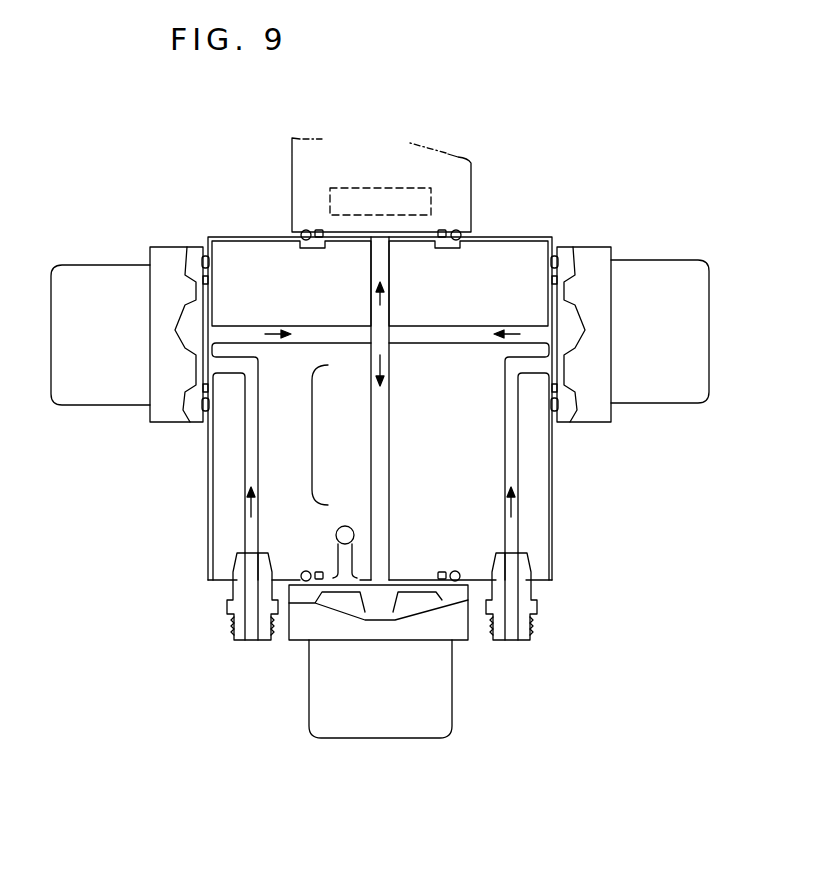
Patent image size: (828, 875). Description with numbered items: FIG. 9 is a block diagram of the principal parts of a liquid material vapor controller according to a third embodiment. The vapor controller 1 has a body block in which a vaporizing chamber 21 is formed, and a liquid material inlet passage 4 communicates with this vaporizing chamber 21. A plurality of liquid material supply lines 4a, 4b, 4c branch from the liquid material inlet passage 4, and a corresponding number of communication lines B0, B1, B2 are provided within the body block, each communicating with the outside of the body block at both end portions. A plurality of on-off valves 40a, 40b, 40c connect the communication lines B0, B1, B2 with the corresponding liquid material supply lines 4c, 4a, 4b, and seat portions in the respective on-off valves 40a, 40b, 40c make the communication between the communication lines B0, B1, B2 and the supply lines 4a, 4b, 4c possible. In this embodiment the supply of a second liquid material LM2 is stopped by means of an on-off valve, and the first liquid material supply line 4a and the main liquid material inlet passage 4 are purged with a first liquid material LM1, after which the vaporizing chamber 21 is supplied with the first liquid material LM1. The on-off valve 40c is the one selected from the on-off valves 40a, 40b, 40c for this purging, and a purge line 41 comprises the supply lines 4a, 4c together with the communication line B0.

The vapor controller 1 is at (521, 182).
The vaporizing chamber 21 is at (362, 188).
The liquid material inlet passage 4 is at (376, 268).
The first liquid material supply line 4a is at (345, 340).
The liquid material supply line 4b is at (440, 333).
The liquid material supply line 4c is at (371, 426).
The purge line 41 is at (298, 435).
The communication line B1 is at (248, 398).
The communication line B2 is at (498, 420).
The communication line B0 is at (336, 552).
The on-off valve 40a is at (47, 372).
The on-off valve 40b is at (665, 412).
The on-off valve 40c is at (425, 724).
The first liquid material LM1 is at (250, 660).
The second liquid material LM2 is at (508, 668).